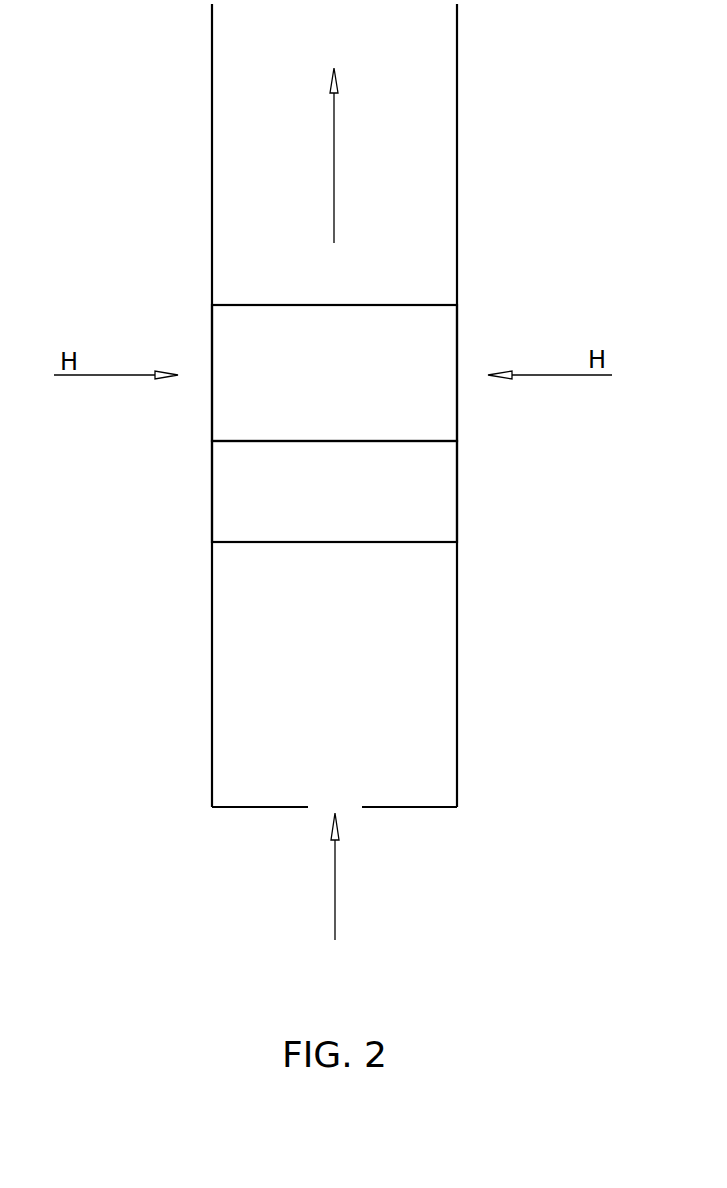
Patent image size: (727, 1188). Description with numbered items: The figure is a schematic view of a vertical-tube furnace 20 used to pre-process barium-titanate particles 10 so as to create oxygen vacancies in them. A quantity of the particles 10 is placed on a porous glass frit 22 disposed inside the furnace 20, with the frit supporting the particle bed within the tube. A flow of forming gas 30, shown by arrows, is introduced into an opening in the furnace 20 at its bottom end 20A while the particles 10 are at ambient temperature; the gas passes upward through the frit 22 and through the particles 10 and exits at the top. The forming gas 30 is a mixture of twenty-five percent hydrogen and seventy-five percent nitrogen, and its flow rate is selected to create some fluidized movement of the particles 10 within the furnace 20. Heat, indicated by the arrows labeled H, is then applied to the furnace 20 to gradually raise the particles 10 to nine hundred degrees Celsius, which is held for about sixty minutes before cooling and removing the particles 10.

The barium-titanate particles 10 is at (428, 340).
The vertical-tube furnace 20 is at (457, 88).
The bottom end 20A is at (442, 807).
The porous glass frit 22 is at (435, 498).
The forming gas 30 is at (334, 170).